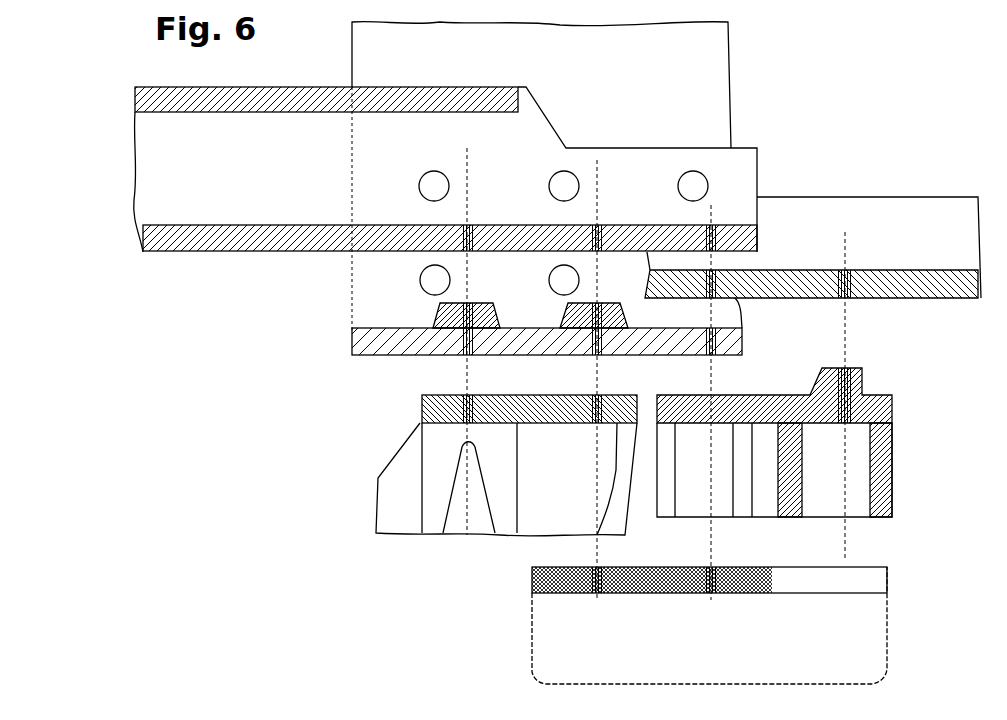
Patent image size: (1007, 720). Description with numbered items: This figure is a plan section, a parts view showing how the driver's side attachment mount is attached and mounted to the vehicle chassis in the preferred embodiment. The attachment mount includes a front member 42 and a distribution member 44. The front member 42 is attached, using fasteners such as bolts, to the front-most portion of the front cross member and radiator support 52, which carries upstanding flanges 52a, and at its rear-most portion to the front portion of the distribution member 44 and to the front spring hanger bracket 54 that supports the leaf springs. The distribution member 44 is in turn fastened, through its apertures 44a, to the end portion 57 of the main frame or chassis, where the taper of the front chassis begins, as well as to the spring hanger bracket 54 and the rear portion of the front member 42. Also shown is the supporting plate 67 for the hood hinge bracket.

The front member 42 is at (183, 254).
The front cross member and radiator support 52 is at (359, 306).
The upstanding flanges 52a is at (388, 357).
The end portion 57 is at (905, 298).
The front spring hanger bracket 54 is at (894, 470).
The supporting plate 67 is at (478, 540).
The distribution member 44 is at (876, 568).
The apertures 44a is at (700, 600).